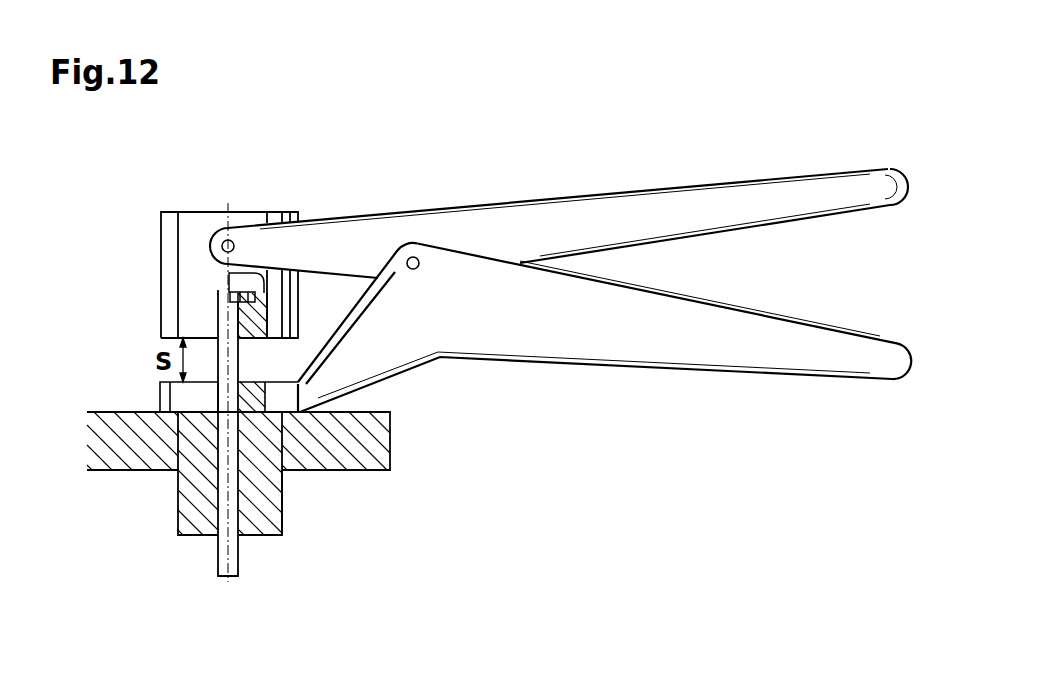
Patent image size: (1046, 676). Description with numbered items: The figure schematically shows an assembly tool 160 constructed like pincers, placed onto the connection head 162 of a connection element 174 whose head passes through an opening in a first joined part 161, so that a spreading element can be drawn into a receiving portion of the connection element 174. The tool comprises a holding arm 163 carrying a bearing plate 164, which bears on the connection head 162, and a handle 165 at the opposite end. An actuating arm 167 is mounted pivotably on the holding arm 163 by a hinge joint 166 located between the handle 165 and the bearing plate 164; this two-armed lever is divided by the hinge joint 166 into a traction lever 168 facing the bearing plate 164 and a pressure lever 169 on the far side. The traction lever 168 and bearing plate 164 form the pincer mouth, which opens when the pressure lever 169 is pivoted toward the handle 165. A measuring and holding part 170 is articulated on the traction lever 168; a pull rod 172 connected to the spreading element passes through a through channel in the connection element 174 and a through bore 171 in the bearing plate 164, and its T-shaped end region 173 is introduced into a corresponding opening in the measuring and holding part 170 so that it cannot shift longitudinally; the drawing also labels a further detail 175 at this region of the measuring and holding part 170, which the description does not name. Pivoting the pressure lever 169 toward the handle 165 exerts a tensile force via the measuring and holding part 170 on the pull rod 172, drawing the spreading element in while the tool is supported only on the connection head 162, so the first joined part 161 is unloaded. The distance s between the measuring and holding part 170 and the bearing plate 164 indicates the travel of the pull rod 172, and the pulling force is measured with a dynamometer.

The assembly tool 160 is at (560, 254).
The first joined part 161 is at (370, 435).
The connection head 162 is at (295, 470).
The holding arm 163 is at (423, 292).
The bearing plate 164 is at (160, 383).
The handle 165 is at (743, 357).
The hinge joint 166 is at (415, 257).
The actuating arm 167 is at (559, 195).
The traction lever 168 is at (310, 235).
The pressure lever 169 is at (795, 190).
The measuring and holding part 170 is at (188, 222).
The through bore 171 is at (237, 400).
The pull rod 172 is at (237, 570).
The T-shaped end region 173 is at (230, 297).
The connection element 174 is at (268, 530).
The bushing 175 is at (228, 287).